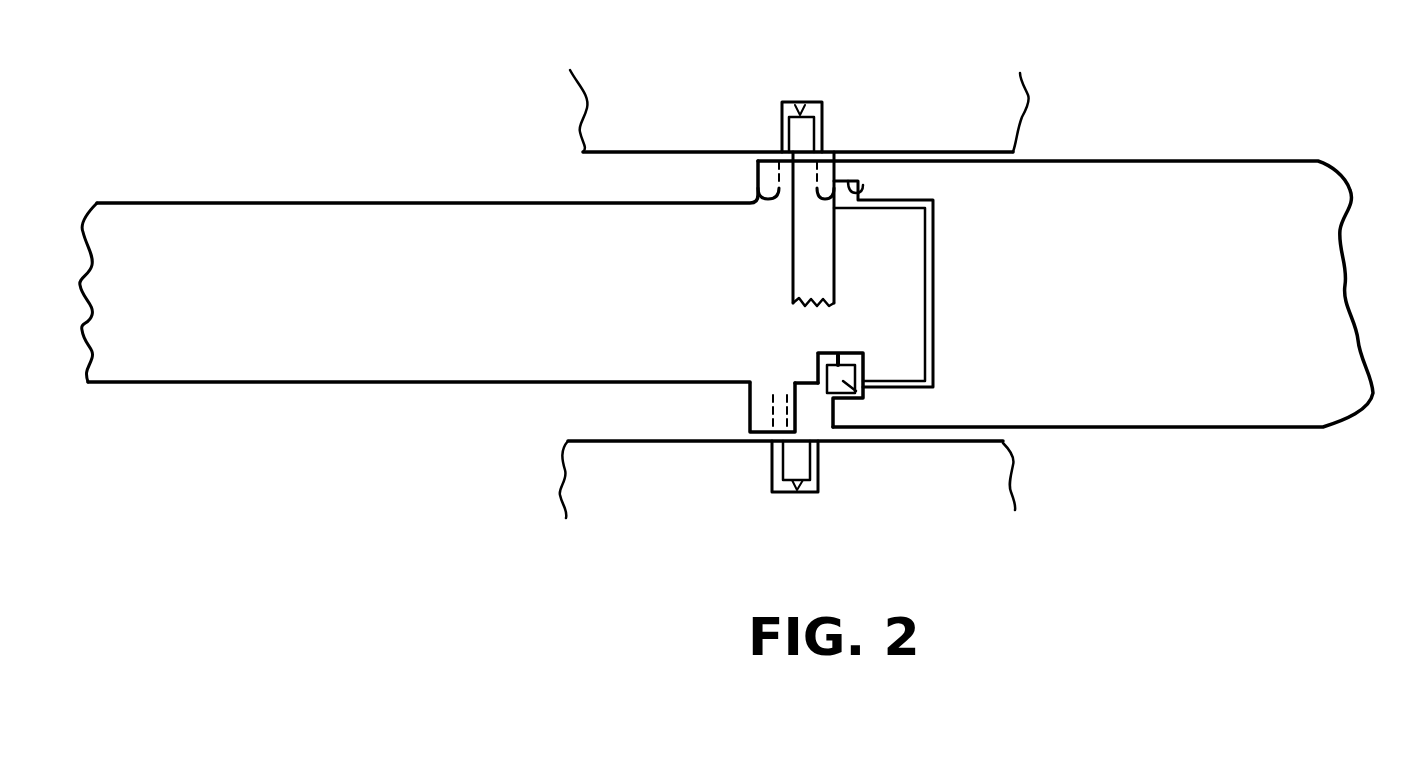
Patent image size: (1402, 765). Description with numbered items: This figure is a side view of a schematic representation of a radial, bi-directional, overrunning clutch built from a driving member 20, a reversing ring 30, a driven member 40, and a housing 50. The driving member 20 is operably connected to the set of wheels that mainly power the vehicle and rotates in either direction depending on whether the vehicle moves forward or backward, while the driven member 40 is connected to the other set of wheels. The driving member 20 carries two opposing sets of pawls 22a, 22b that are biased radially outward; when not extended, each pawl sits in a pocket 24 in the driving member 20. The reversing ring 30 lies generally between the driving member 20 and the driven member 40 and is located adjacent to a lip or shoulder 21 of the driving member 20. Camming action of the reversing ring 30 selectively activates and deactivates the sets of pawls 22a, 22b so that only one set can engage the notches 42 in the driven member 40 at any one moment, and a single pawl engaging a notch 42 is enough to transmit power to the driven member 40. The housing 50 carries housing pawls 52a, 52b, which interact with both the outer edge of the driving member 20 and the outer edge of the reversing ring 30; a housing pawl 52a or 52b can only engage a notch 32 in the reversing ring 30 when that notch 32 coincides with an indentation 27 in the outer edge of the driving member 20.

The driving member 20 is at (331, 301).
The lip or shoulder 21 is at (746, 400).
The pawls 22a is at (866, 389).
The pawls 22b is at (974, 374).
The pocket 24 is at (826, 360).
The indentations 27 is at (758, 197).
The reversing ring 30 is at (813, 260).
The notches 32 is at (823, 197).
The driven member 40 is at (1187, 264).
The notches 42 is at (862, 190).
The housing 50 is at (980, 118).
The housing pawl 52a is at (795, 467).
The housing pawl 52b is at (903, 501).